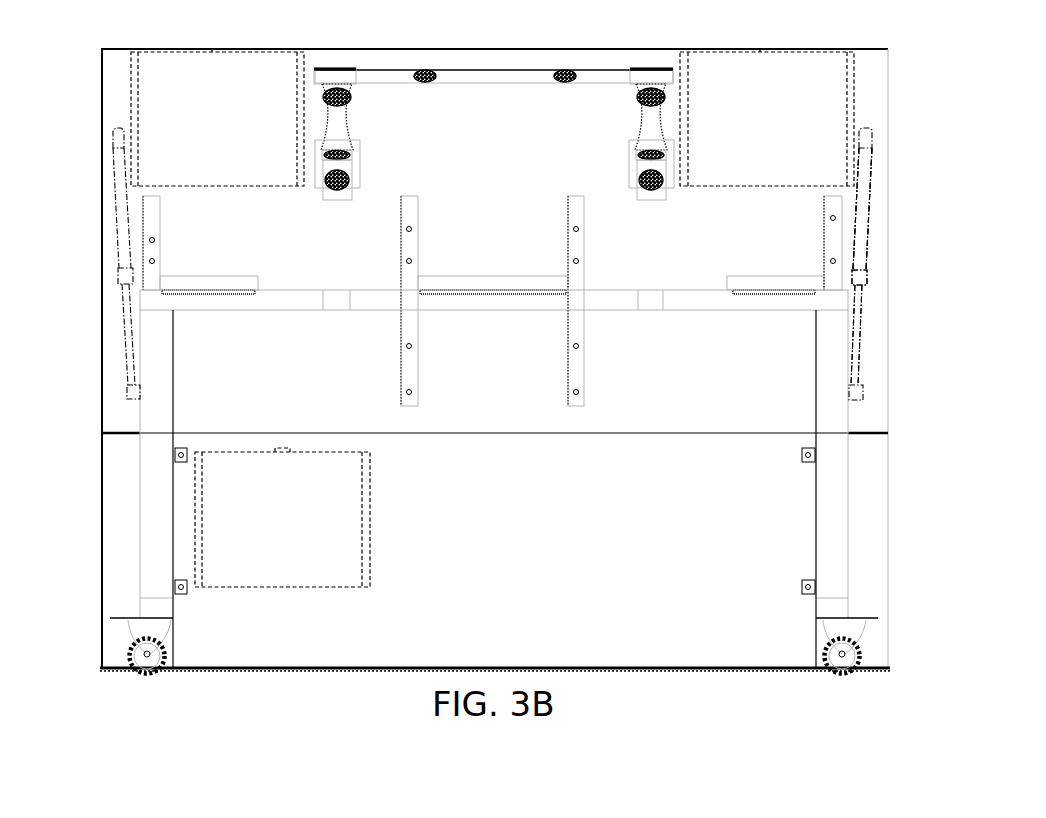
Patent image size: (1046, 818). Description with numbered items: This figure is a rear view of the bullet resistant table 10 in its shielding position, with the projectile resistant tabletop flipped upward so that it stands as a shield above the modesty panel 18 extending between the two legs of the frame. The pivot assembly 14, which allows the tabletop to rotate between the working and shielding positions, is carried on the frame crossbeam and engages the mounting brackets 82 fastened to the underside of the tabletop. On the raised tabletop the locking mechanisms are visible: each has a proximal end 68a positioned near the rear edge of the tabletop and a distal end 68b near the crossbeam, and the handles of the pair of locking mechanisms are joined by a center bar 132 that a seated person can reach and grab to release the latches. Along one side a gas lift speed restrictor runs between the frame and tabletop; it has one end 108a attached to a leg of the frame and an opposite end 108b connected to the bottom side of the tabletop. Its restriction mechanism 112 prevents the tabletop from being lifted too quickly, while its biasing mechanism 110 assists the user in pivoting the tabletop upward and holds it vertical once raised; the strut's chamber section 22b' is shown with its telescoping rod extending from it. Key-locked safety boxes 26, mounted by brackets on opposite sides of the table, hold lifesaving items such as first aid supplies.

The table 10 is at (69, 20).
The pivot assembly 14 is at (180, 292).
The modesty panel 18 is at (865, 557).
The key-locked safety box 26 is at (166, 78).
The proximal end 68a is at (328, 80).
The distal end 68b is at (328, 178).
The mounting bracket 82 is at (155, 221).
The end of lift speed restrictor 108a is at (857, 392).
The opposite end of lift speed restrictor 108b is at (868, 142).
The biasing mechanism 110 is at (860, 247).
The restriction mechanism 112 is at (860, 200).
The center bar 132 is at (385, 80).
The chamber section 22b' is at (905, 216).